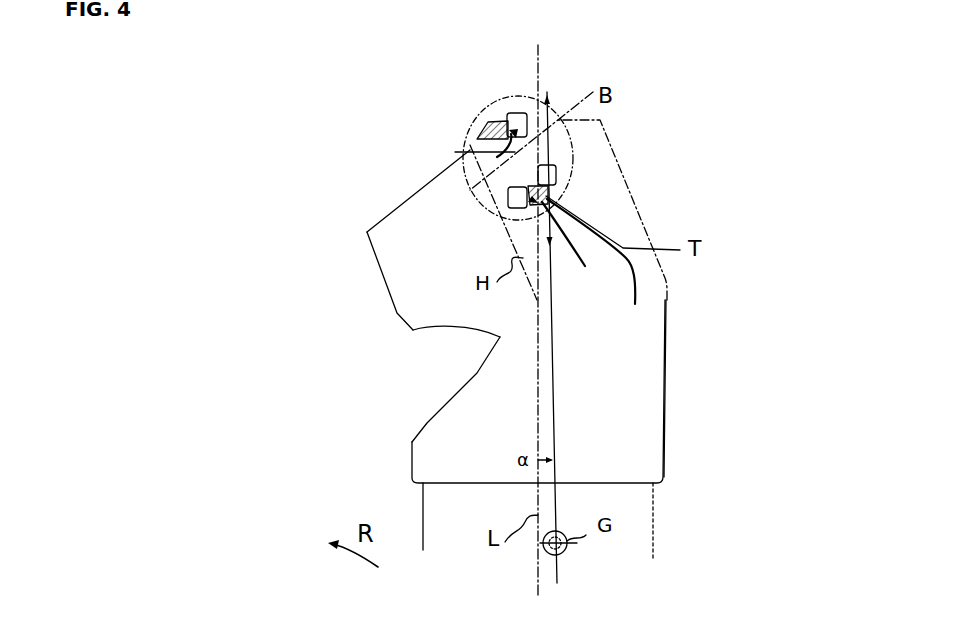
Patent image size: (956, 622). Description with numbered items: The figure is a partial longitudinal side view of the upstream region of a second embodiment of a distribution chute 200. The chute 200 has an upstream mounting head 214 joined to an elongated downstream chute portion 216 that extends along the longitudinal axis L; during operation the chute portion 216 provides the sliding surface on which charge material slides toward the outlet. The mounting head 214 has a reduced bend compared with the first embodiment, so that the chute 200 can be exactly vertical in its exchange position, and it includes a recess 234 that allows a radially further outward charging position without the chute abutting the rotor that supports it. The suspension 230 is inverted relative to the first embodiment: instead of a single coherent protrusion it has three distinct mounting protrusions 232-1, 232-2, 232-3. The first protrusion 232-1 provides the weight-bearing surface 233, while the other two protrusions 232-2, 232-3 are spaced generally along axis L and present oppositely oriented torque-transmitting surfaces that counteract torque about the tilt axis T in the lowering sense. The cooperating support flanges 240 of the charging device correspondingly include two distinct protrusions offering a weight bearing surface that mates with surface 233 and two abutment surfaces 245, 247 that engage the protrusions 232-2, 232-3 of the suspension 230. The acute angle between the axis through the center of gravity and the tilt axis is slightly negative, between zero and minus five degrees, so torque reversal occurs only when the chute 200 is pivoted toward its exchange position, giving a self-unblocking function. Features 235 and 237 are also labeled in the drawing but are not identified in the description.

The chute 200 is at (318, 263).
The mounting head 214 is at (655, 410).
The chute portion 216 is at (655, 525).
The suspension 230 is at (517, 94).
The first protrusion 232-1 is at (565, 174).
The second protrusion 232-2 is at (508, 110).
The third protrusion 232-3 is at (513, 210).
The weight-bearing surface 233 is at (599, 262).
The recess 234 is at (470, 363).
The insert seat 235 is at (498, 116).
The flute wall 237 is at (582, 247).
The support flanges 240 is at (488, 156).
The abutment surface 245 is at (497, 157).
The abutment surface 247 is at (500, 194).